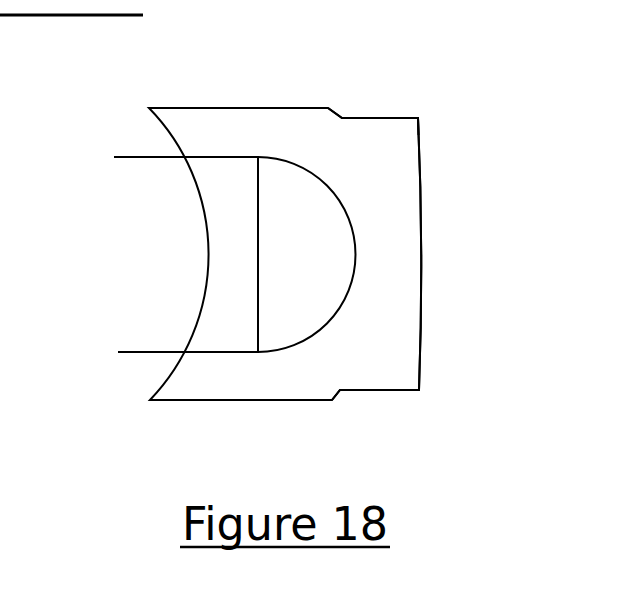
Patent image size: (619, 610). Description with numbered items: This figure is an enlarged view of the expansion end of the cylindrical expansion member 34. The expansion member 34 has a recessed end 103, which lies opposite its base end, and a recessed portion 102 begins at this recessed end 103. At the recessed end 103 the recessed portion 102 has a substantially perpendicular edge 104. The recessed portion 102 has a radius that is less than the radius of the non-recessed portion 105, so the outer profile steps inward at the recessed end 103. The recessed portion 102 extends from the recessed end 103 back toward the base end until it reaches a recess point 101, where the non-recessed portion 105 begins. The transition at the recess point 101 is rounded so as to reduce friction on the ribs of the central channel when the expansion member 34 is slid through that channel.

The expansion member 34 is at (205, 108).
The recess point 101 is at (333, 400).
The recessed portion 102 is at (377, 118).
The recessed end 103 is at (425, 258).
The substantially perpendicular edge 104 is at (421, 117).
The non-recessed portion 105 is at (227, 405).